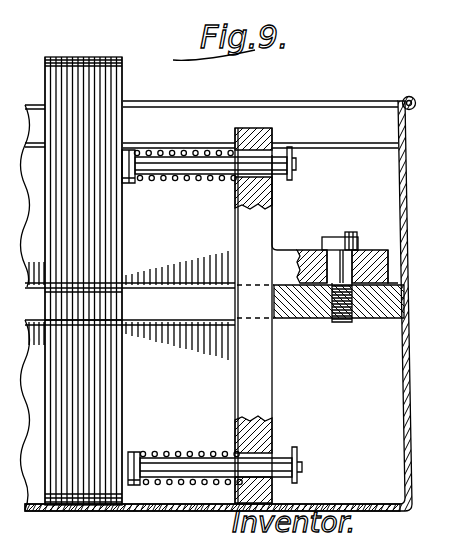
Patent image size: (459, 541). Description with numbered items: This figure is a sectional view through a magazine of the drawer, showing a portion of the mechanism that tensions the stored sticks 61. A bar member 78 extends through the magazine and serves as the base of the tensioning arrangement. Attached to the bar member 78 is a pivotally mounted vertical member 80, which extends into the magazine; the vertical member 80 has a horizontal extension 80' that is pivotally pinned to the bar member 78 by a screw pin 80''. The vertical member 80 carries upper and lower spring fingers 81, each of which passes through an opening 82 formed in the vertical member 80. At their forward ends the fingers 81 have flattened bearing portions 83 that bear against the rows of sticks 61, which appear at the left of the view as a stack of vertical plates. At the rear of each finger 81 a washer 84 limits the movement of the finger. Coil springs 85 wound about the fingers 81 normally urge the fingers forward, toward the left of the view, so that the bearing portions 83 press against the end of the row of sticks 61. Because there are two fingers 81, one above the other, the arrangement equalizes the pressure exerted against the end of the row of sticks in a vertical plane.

The sticks 61 is at (107, 57).
The bar member 78 is at (310, 312).
The pivotally attached vertical member 80 is at (330, 219).
The horizontal extension 80' is at (336, 245).
The screw pin 80'' is at (352, 262).
The spring finger 81 is at (167, 163).
The opening 82 is at (230, 180).
The flattened bearing portion 83 is at (127, 187).
The washer 84 is at (297, 177).
The coil spring 85 is at (193, 152).